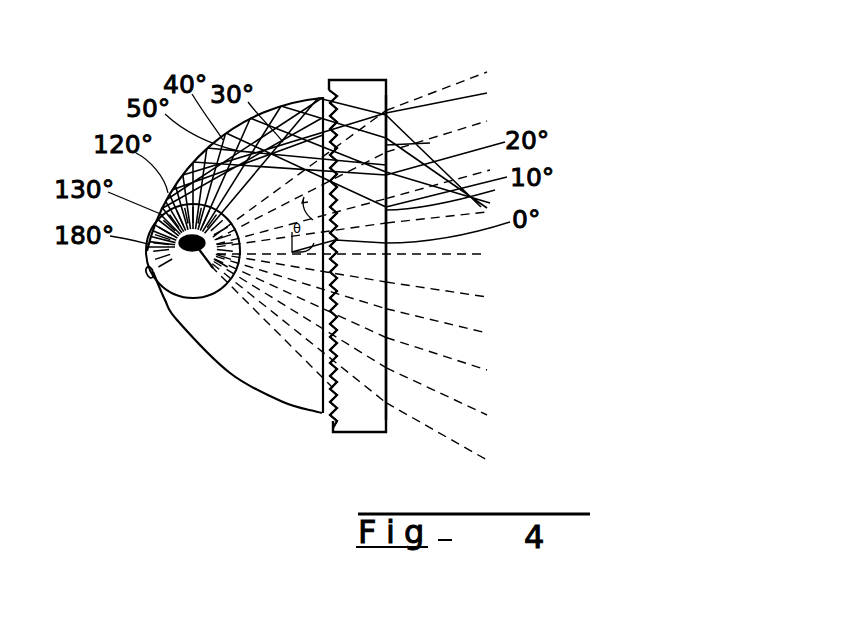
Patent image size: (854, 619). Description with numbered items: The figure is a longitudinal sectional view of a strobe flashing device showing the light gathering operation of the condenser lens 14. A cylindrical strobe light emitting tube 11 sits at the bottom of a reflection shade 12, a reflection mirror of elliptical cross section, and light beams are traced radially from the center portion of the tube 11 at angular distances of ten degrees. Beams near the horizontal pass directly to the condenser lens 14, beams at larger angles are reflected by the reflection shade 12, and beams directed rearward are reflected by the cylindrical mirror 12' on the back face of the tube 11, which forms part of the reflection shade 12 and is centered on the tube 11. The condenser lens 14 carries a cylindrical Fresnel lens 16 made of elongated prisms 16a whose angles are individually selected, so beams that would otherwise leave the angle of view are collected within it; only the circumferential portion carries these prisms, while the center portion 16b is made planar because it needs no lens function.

The strobe light emitting tube 11 is at (186, 290).
The reflection shade 12 is at (235, 262).
The cylindrical mirror 12' is at (124, 301).
The condenser lens 14 is at (370, 87).
The cylindrical Fresnel lens 16 is at (332, 95).
The elongated prisms 16a is at (333, 259).
The center portion 16b is at (386, 277).